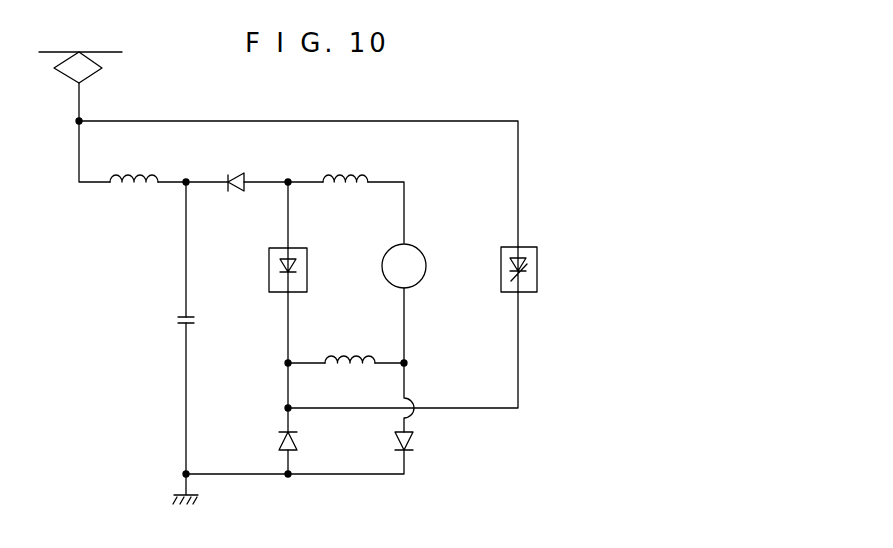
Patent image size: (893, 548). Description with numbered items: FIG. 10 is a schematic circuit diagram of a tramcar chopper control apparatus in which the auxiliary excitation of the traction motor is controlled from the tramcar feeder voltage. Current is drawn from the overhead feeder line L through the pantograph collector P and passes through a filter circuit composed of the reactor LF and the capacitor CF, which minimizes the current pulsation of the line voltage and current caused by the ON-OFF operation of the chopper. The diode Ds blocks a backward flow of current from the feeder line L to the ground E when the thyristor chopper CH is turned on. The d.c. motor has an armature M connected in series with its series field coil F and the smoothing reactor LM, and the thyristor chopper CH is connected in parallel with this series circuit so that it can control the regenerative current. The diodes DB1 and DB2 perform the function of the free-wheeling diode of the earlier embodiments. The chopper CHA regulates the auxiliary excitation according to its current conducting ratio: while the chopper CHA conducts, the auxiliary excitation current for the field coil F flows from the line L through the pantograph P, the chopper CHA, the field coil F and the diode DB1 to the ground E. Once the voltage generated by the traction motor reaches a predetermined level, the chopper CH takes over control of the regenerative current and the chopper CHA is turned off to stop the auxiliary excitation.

The overhead feeder line L is at (99, 52).
The pantograph collector P is at (102, 68).
The filter reactor LF is at (130, 190).
The blocking diode Ds is at (234, 171).
The smoothing reactor LM is at (343, 174).
The thyristor chopper CH is at (307, 270).
The armature of d.c. motor M is at (404, 266).
The auxiliary excitation chopper CHA is at (537, 262).
The filter capacitor CF is at (200, 321).
The series field coil F is at (346, 355).
The diode DB2 is at (300, 438).
The diode DB1 is at (415, 442).
The ground E is at (200, 494).